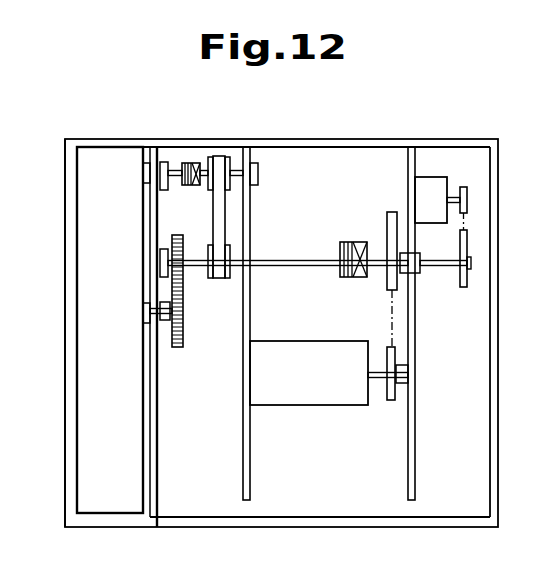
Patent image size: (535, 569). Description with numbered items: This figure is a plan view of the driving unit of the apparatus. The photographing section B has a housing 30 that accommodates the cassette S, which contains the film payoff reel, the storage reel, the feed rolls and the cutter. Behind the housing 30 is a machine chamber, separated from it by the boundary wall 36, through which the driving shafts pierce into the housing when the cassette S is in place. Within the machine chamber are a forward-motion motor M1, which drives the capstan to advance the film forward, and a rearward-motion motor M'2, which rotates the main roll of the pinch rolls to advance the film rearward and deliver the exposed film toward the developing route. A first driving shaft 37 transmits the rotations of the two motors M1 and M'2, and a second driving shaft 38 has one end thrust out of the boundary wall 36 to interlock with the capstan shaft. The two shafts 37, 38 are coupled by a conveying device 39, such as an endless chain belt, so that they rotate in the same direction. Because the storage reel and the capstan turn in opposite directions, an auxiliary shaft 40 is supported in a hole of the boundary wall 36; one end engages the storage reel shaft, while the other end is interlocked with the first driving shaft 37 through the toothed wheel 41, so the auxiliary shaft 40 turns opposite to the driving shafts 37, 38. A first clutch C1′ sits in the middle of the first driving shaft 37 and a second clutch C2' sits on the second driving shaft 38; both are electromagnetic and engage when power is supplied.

The housing 30 is at (147, 462).
The cassette S is at (93, 263).
The photographing section B is at (63, 368).
The boundary wall 36 is at (153, 423).
The first driving shaft 37 is at (282, 265).
The second driving shaft 38 is at (237, 172).
The conveying device 39 is at (218, 219).
The auxiliary shaft 40 is at (168, 319).
The toothed wheel 41 is at (183, 303).
The first clutch C1′ is at (356, 241).
The second clutch C2' is at (185, 143).
The forward-motion motor M1 is at (308, 397).
The rearward-motion motor M'2 is at (441, 166).